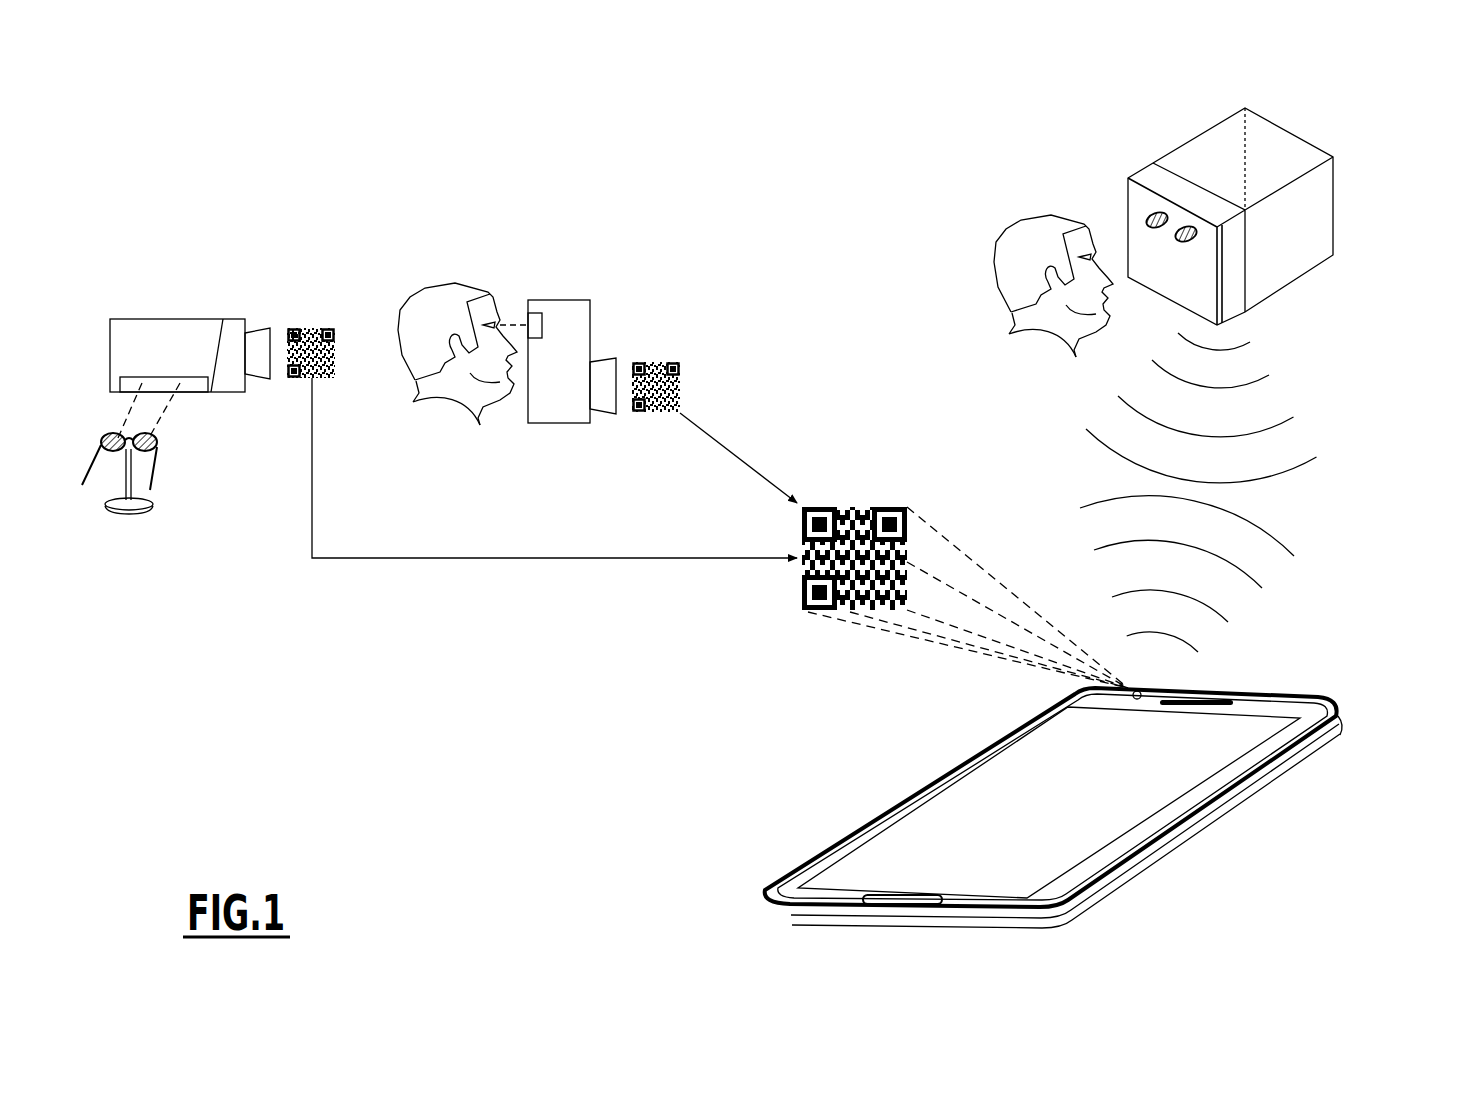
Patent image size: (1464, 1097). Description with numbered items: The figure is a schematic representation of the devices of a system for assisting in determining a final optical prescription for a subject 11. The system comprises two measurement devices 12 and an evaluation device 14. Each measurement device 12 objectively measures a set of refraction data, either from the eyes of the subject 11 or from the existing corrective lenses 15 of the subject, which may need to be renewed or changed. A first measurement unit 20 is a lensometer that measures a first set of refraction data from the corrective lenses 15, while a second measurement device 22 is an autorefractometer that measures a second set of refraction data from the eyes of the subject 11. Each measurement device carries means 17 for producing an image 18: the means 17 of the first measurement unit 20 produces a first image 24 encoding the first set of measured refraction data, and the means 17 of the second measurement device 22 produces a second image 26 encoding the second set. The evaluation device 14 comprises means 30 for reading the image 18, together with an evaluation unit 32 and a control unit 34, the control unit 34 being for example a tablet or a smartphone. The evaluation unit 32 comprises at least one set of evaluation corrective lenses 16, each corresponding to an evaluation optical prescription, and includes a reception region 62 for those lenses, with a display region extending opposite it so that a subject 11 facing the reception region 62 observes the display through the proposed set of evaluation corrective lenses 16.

The subject 11 is at (1023, 250).
The measurement device 12 is at (550, 430).
The evaluation device 14 is at (1365, 315).
The corrective lenses 15 is at (152, 455).
The set of evaluation corrective lenses 16 is at (1148, 214).
The means for producing an image 17 is at (260, 325).
The image 18 is at (316, 312).
The first measurement unit 20 is at (165, 318).
The second measurement device 22 is at (567, 317).
The first image 24 is at (315, 380).
The second image 26 is at (681, 390).
The means for reading the image 30 is at (1140, 690).
The evaluation unit 32 is at (1342, 170).
The control unit 34 is at (1211, 830).
The reception region 62 is at (1245, 133).